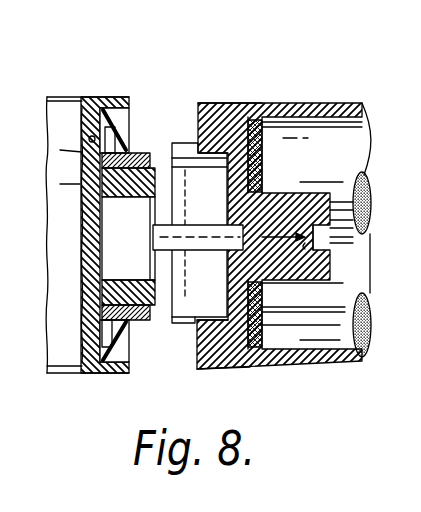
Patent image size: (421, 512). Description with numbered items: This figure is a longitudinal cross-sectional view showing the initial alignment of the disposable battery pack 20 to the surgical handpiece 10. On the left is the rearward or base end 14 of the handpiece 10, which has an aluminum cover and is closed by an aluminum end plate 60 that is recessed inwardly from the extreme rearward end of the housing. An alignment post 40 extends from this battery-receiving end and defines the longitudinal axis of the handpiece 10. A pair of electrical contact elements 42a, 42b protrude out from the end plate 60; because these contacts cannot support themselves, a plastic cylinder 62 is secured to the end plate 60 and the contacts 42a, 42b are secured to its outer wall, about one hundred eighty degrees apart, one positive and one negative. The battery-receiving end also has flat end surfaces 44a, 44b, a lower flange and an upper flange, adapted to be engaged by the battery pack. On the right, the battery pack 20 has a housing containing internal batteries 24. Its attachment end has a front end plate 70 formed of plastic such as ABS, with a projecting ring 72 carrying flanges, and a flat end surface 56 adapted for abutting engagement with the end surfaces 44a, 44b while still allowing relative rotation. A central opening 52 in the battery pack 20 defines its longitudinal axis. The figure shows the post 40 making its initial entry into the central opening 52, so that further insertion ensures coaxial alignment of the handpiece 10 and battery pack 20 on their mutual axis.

The surgical handpiece 10 is at (66, 75).
The rearward or base end 14 is at (98, 97).
The disposable battery pack 20 is at (358, 75).
The internal batteries 24 is at (342, 143).
The alignment post 40 is at (153, 237).
The electrical contact element 42a is at (152, 168).
The electrical contact element 42b is at (155, 305).
The flat end surface (lower flange) 44a is at (128, 320).
The flat end surface (upper flange) 44b is at (140, 153).
The central opening 52 is at (330, 252).
The flat end surface 56 is at (213, 103).
The end plate 60 is at (60, 150).
The plastic cylinder 62 is at (60, 184).
The front end plate 70 is at (220, 369).
The projecting ring 72 is at (190, 143).